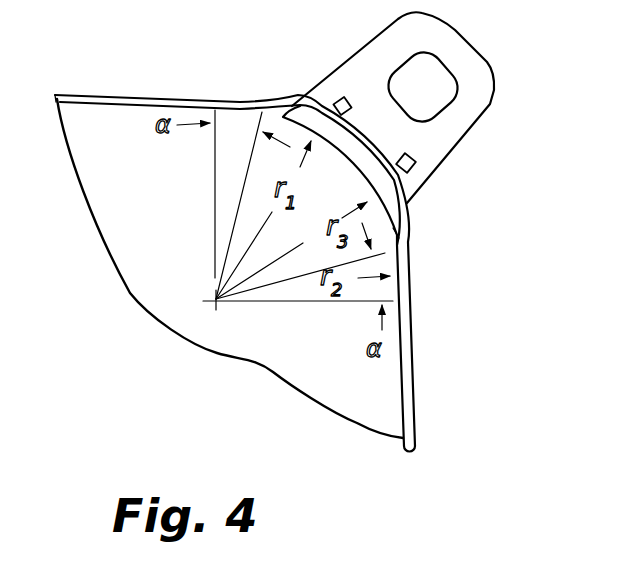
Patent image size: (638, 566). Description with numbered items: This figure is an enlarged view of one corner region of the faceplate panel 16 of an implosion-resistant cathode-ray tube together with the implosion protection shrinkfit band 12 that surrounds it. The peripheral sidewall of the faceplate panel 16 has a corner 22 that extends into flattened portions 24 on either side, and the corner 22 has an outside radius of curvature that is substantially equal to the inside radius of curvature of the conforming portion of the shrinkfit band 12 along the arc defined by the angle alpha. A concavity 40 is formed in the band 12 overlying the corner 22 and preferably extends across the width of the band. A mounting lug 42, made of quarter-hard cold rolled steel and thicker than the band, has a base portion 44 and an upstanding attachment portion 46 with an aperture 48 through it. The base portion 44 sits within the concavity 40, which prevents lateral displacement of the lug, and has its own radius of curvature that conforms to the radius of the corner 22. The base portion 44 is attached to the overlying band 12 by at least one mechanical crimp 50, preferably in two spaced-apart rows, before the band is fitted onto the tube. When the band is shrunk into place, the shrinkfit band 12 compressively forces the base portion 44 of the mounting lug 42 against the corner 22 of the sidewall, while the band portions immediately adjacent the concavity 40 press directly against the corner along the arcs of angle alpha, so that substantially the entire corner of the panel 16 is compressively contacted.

The shrinkfit band 12 is at (416, 385).
The faceplate panel 16 is at (268, 369).
The corner 22 is at (356, 178).
The flattened portion 24 is at (137, 108).
The concavity 40 is at (395, 235).
The mounting lug 42 is at (437, 107).
The base portion 44 is at (383, 192).
The attachment portion 46 is at (447, 125).
The aperture 48 is at (427, 90).
The mechanical crimp 50 is at (343, 98).